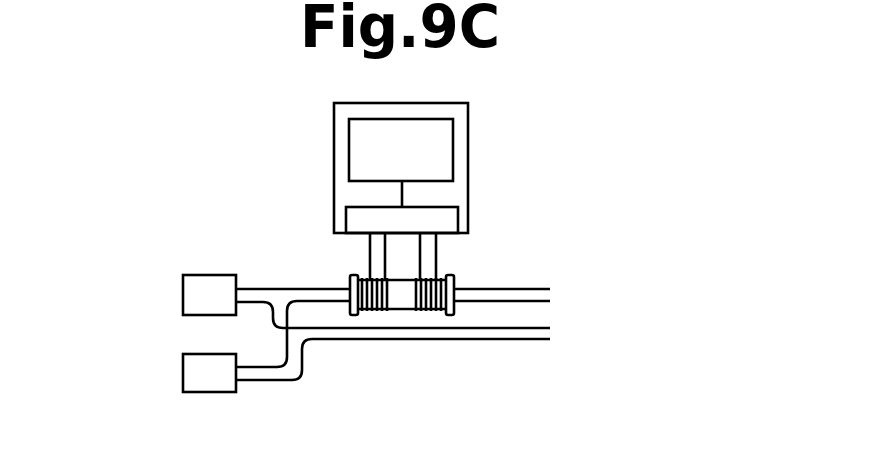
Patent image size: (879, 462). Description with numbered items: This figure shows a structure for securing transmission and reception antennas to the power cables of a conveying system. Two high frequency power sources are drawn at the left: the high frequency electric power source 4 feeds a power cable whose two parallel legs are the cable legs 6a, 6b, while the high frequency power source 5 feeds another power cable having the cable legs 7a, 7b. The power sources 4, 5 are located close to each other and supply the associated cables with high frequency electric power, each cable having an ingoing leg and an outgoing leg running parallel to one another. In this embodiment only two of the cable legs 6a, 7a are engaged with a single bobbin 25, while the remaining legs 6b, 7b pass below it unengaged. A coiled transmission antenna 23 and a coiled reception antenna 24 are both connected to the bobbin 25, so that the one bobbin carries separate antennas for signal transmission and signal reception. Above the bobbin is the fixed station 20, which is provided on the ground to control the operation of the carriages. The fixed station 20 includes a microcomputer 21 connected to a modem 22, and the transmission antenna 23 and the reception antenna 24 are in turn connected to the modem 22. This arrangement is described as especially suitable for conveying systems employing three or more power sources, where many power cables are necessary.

The high frequency electric power source 4 is at (183, 291).
The high frequency power source 5 is at (183, 372).
The cable leg 6a is at (483, 289).
The cable leg 6b is at (488, 328).
The cable leg 7a is at (525, 301).
The cable leg 7b is at (527, 339).
The fixed station 20 is at (334, 135).
The microcomputer 21 is at (423, 159).
The modem 22 is at (346, 212).
The transmission antenna 23 is at (378, 311).
The reception antenna 24 is at (437, 311).
The bobbin 25 is at (350, 283).